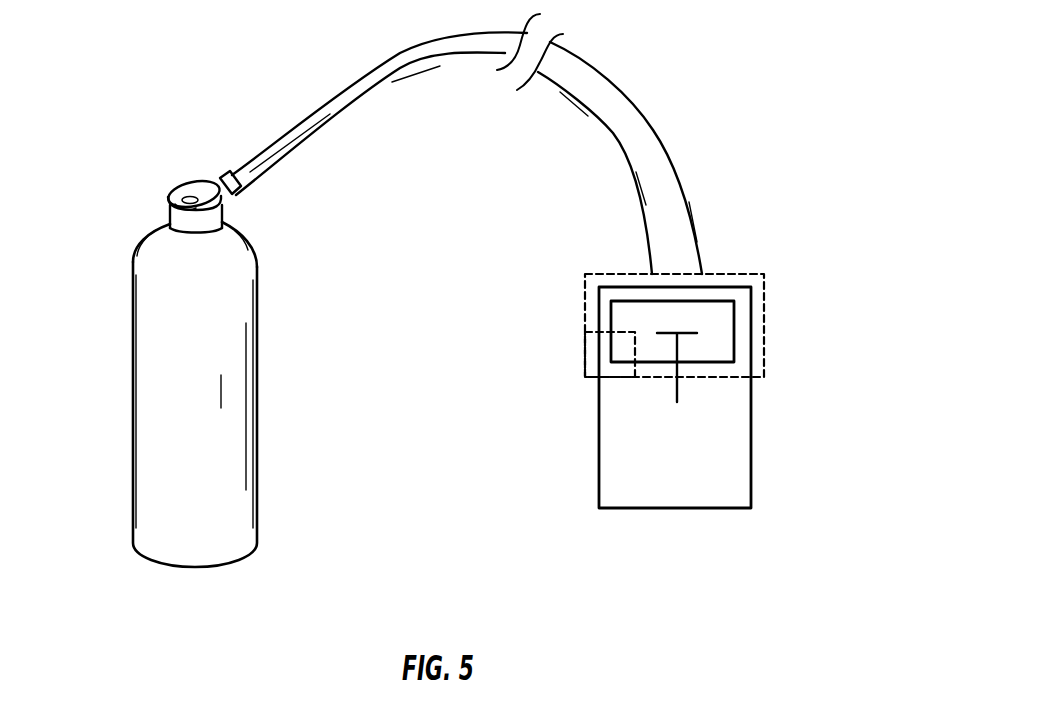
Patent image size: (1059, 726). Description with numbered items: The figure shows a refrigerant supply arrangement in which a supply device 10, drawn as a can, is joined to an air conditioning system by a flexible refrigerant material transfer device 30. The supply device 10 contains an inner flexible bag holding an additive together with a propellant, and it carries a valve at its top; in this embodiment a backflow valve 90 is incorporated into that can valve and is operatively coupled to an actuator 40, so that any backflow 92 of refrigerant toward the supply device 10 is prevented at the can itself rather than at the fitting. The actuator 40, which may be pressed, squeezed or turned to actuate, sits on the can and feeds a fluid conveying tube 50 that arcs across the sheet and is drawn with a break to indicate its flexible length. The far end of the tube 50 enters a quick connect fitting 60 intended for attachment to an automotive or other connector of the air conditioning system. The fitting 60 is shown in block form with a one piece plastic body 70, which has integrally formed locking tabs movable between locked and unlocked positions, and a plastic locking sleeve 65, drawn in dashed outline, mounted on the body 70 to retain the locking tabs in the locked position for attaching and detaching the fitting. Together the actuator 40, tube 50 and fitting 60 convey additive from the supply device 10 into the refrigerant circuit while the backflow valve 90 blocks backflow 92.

The supply device 10 is at (258, 388).
The refrigerant material transfer device 30 is at (480, 139).
The actuator 40 is at (114, 222).
The fluid conveying tube 50 is at (580, 97).
The quick connect fitting 60 is at (720, 327).
The locking sleeve 65 is at (612, 273).
The body 70 is at (742, 485).
The backflow valve 90 is at (727, 300).
The backflow 92 is at (678, 347).